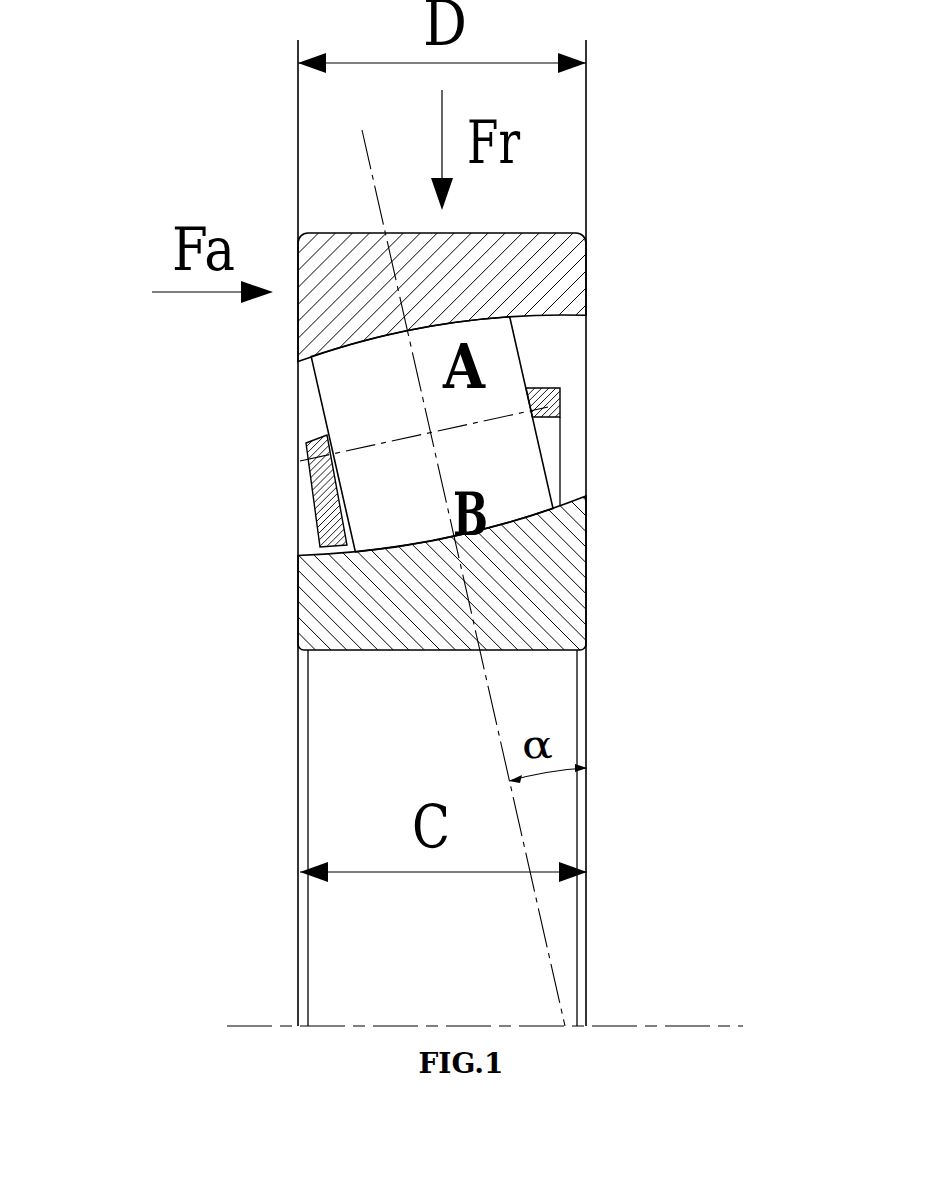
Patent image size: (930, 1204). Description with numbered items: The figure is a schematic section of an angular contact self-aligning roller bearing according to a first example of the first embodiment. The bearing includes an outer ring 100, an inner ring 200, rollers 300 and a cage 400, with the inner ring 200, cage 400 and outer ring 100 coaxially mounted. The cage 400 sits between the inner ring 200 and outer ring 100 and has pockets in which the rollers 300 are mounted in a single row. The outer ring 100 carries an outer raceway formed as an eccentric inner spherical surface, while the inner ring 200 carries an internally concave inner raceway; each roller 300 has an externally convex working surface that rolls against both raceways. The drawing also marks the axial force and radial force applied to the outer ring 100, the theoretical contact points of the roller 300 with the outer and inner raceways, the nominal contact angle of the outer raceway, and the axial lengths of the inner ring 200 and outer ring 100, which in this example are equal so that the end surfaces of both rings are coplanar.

The outer ring 100 is at (480, 292).
The inner ring 200 is at (417, 598).
The roller 300 is at (418, 470).
The cage 400 is at (555, 393).